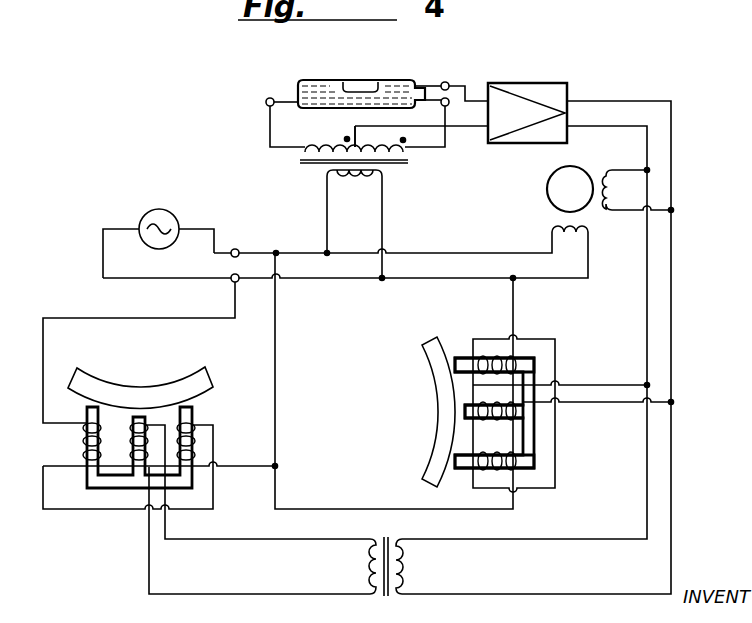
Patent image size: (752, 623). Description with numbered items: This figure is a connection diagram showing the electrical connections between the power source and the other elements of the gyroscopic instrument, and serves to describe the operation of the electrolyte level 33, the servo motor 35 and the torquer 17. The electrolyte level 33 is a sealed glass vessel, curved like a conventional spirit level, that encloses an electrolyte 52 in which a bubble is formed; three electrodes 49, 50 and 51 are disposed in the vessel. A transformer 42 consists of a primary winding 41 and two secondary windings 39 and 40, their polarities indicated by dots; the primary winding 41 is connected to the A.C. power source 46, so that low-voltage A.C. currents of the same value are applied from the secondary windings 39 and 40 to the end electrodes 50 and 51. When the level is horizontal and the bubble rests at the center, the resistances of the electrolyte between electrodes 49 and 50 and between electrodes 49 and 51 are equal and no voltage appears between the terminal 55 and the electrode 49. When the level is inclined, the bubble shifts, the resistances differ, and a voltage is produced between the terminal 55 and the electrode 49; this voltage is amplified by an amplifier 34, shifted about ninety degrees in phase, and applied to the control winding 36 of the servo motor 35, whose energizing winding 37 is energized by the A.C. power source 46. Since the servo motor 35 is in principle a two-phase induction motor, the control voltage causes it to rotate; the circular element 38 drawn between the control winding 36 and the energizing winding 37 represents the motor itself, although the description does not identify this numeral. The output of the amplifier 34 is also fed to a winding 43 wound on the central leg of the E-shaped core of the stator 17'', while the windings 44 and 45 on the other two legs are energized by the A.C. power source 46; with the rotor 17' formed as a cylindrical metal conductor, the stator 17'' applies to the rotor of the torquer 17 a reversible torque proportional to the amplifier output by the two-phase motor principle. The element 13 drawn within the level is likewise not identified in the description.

The float element 13 is at (357, 80).
The torquer 17 is at (310, 392).
The rotor 17' is at (261, 391).
The stator 17'' is at (302, 383).
The electrolyte level 33 is at (415, 82).
The amplifier 34 is at (542, 83).
The servo motor 35 is at (540, 180).
The control winding 36 is at (610, 183).
The energizing winding 37 is at (587, 230).
The relay armature 38 is at (545, 197).
The secondary winding 39 is at (305, 152).
The secondary winding 40 is at (403, 152).
The primary winding 41 is at (350, 182).
The transformer 42 is at (312, 163).
The winding 43 is at (465, 413).
The winding 44 is at (455, 368).
The winding 45 is at (455, 458).
The A.C. power source 46 is at (157, 208).
The electrode 49 is at (430, 82).
The electrode 50 is at (449, 90).
The electrode 51 is at (283, 99).
The electrolyte 52 is at (310, 90).
The terminal 55 is at (345, 137).